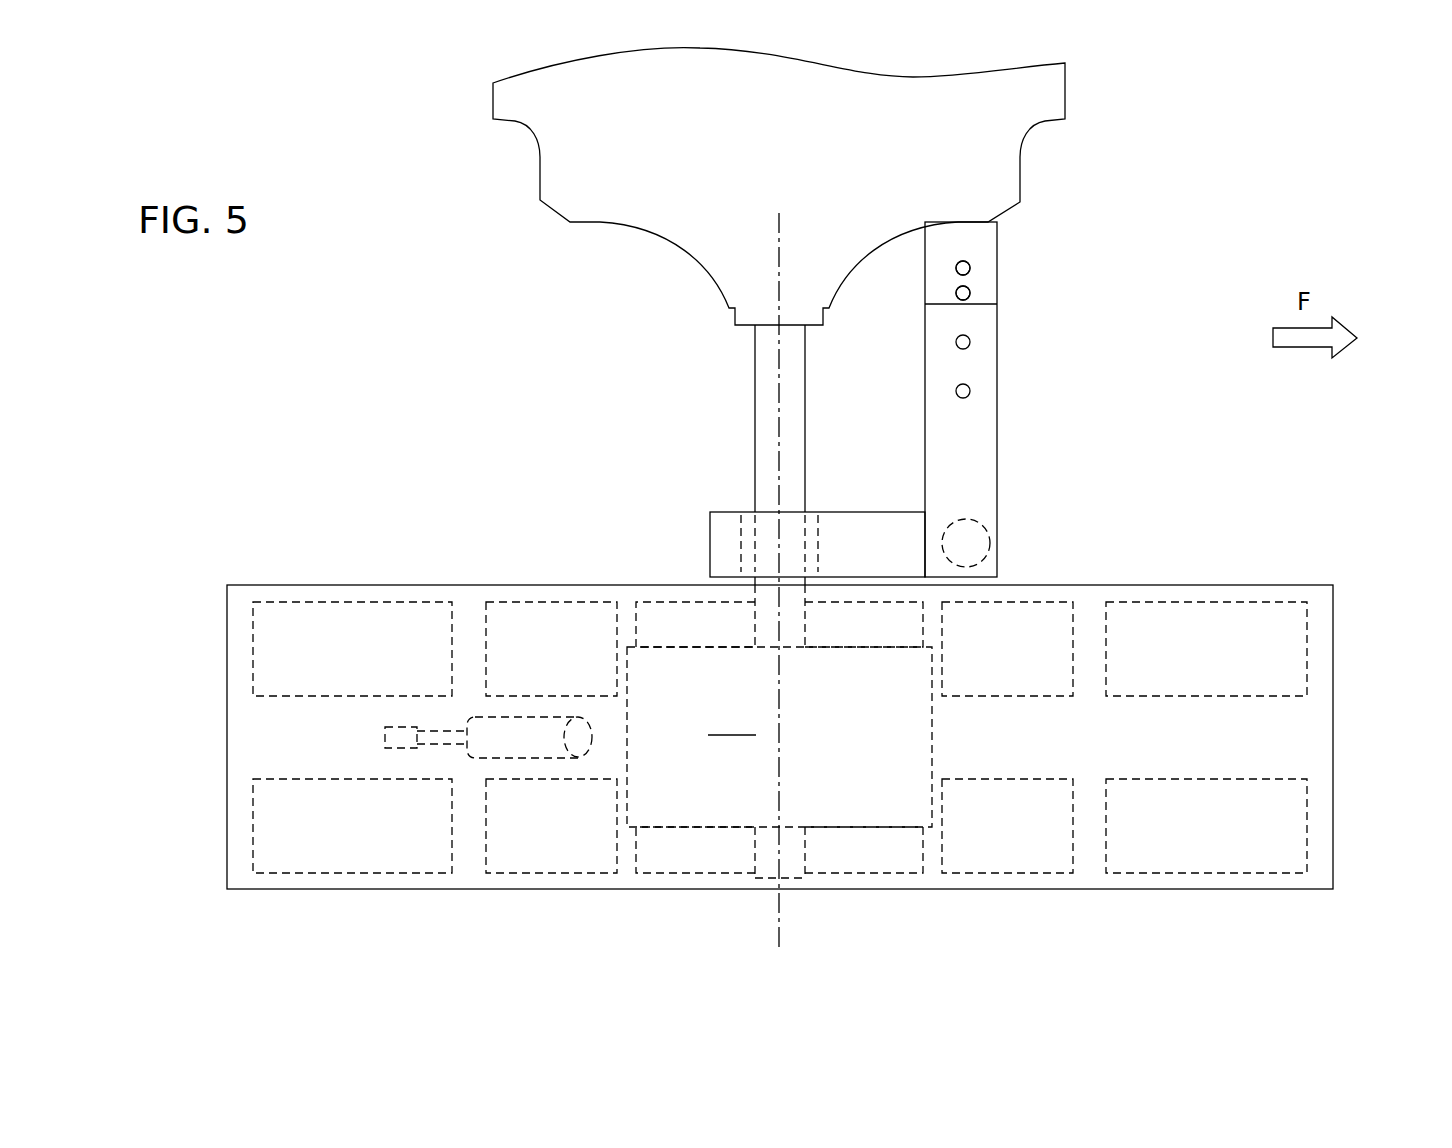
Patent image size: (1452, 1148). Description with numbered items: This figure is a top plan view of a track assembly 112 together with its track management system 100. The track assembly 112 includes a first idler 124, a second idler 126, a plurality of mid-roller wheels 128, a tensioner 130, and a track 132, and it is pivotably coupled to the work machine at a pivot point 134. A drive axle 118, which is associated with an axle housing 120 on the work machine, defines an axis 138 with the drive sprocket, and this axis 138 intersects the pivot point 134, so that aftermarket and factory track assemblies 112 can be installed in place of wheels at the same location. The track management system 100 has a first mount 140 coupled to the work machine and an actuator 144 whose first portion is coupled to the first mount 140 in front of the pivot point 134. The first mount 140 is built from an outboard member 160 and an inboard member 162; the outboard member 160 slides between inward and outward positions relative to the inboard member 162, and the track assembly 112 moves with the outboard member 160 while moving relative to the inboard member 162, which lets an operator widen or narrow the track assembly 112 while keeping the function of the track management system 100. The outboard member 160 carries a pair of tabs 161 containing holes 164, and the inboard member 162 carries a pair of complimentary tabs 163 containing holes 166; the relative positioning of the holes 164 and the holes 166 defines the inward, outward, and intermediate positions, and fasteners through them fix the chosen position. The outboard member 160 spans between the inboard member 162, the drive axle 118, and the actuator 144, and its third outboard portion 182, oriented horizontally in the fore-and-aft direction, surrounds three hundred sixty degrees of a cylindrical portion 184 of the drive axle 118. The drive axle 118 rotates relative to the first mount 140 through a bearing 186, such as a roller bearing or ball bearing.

The track management system 100 is at (1178, 333).
The track assembly 112 is at (822, 681).
The drive axle 118 is at (755, 353).
The axle housing 120 is at (1067, 93).
The first idler 124 is at (370, 658).
The second idler 126 is at (1232, 658).
The mid-roller wheels 128 is at (575, 658).
The tensioner 130 is at (382, 745).
The track 132 is at (1333, 630).
The pivot point 134 is at (870, 583).
The axis 138 is at (780, 945).
The first mount 140 is at (1037, 427).
The actuator 144 is at (988, 533).
The outboard member 160 is at (1032, 399).
The tabs 161 is at (997, 512).
The inboard member 162 is at (1022, 286).
The complimentary tabs 163 is at (997, 235).
The holes 164 is at (970, 342).
The holes 166 is at (970, 268).
The third outboard portion 182 is at (725, 512).
The cylindrical portion 184 is at (805, 533).
The bearing 186 is at (818, 553).